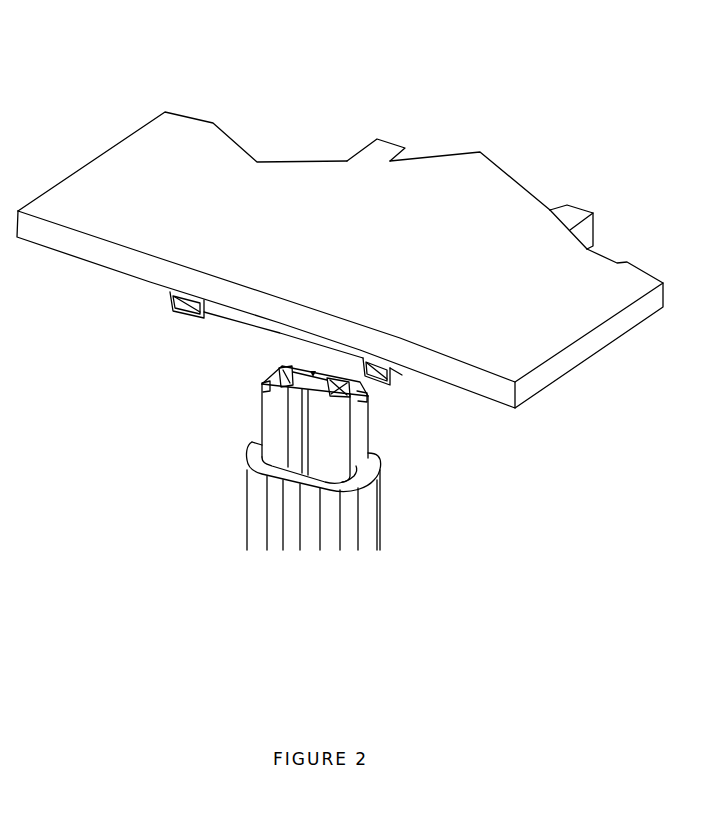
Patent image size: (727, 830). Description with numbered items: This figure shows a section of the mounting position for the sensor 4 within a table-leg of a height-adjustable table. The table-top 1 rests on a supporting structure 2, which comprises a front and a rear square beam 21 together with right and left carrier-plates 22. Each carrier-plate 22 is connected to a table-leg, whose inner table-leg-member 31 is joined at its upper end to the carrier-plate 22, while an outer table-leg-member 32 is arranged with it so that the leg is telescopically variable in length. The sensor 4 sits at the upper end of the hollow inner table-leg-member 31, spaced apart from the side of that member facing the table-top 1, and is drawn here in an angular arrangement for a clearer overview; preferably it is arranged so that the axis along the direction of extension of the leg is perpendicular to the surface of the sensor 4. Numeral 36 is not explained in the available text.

The table-top 1 is at (390, 245).
The supporting structure 2 is at (367, 139).
The square beam 21 is at (400, 143).
The carrier-plate 22 is at (247, 321).
The inner table-leg-member 31 is at (343, 433).
The outer table-leg-member 32 is at (337, 522).
The latching elements 36 is at (282, 366).
The sensor 4 is at (262, 383).